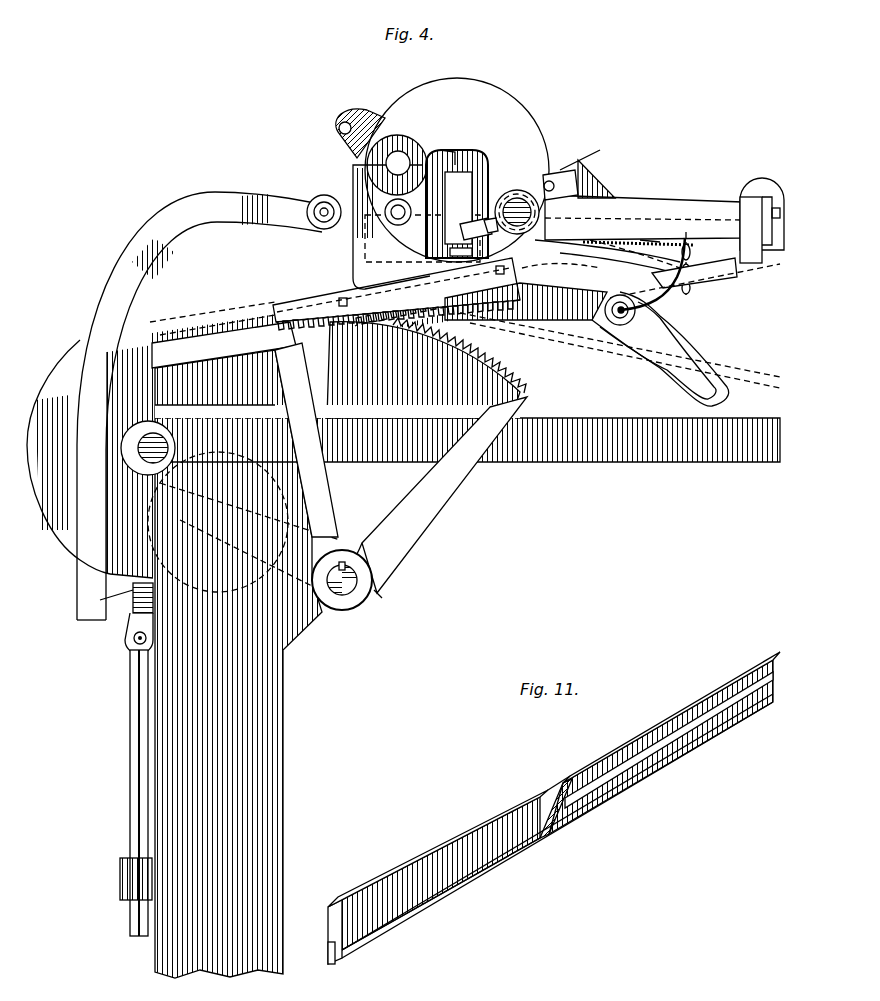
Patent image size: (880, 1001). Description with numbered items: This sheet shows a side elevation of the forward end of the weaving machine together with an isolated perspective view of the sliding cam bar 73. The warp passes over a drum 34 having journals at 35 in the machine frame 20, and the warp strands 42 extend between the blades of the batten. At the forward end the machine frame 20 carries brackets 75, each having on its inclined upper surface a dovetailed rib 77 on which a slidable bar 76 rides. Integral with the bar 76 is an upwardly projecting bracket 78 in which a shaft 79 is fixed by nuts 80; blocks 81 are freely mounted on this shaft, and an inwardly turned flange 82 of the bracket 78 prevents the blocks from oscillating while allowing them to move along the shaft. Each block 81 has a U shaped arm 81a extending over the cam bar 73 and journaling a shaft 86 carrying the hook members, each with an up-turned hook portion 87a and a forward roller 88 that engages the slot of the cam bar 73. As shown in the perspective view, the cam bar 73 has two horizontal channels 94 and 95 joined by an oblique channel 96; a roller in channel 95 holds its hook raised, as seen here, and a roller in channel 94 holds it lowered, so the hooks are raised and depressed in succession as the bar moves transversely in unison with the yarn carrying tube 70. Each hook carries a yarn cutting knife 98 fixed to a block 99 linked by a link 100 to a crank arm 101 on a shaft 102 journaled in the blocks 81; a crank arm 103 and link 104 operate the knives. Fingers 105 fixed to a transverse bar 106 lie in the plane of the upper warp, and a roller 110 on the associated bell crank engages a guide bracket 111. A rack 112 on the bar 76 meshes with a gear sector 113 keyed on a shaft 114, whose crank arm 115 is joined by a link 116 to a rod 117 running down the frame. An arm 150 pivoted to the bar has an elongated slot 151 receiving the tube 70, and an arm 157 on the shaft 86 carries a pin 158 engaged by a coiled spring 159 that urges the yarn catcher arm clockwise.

In FIG. 4, the machine frame 20 is at (582, 462).
In FIG. 4, the drum 34 is at (62, 372).
In FIG. 4, the journals 35 is at (150, 446).
In FIG. 4, the warp strands 42 is at (742, 376).
In FIG. 4, the yarn carrying tube 70 is at (640, 320).
In FIG. 4, the sliding cam bar 73 is at (455, 138).
In FIG. 11, the sliding cam bar 73 is at (463, 860).
In FIG. 4, the brackets 75 is at (450, 375).
In FIG. 4, the bars 76 is at (283, 297).
In FIG. 4, the dovetailed rib 77 is at (213, 332).
In FIG. 4, the bracket 78 is at (365, 275).
In FIG. 4, the shaft 79 is at (388, 220).
In FIG. 4, the nuts 80 is at (362, 200).
In FIG. 4, the blocks 81 is at (426, 248).
In FIG. 4, the U shaped arm 81a is at (503, 112).
In FIG. 4, the inwardly turned flange 82 is at (318, 223).
In FIG. 4, the shaft 86 is at (556, 175).
In FIG. 4, the up-turned hook portion 87a is at (690, 245).
In FIG. 4, the roller 88 is at (488, 240).
In FIG. 11, the horizontal channel 94 is at (637, 734).
In FIG. 4, the horizontal channel 95 is at (507, 207).
In FIG. 11, the horizontal channel 95 is at (437, 898).
In FIG. 11, the oblique channel 96 is at (570, 812).
In FIG. 4, the yarn cutting knife 98 is at (612, 173).
In FIG. 4, the block 99 is at (568, 165).
In FIG. 4, the link 100 is at (455, 170).
In FIG. 4, the crank arm 101 is at (375, 160).
In FIG. 4, the shaft 102 is at (390, 163).
In FIG. 4, the crank arm 103 is at (338, 132).
In FIG. 4, the link 104 is at (163, 228).
In FIG. 4, the fingers 105 is at (726, 285).
In FIG. 4, the transverse bar 106 is at (752, 200).
In FIG. 4, the roller 110 is at (475, 322).
In FIG. 4, the bracket 111 is at (410, 386).
In FIG. 4, the rack 112 is at (300, 304).
In FIG. 4, the gear sector 113 is at (427, 518).
In FIG. 4, the shaft 114 is at (350, 583).
In FIG. 4, the crank arm 115 is at (278, 578).
In FIG. 4, the link 116 is at (132, 610).
In FIG. 4, the rod 117 is at (132, 746).
In FIG. 4, the arm 150 is at (592, 327).
In FIG. 4, the elongated slot 151 is at (692, 343).
In FIG. 4, the arm 157 is at (652, 238).
In FIG. 4, the pin 158 is at (570, 250).
In FIG. 4, the coiled spring 159 is at (522, 250).